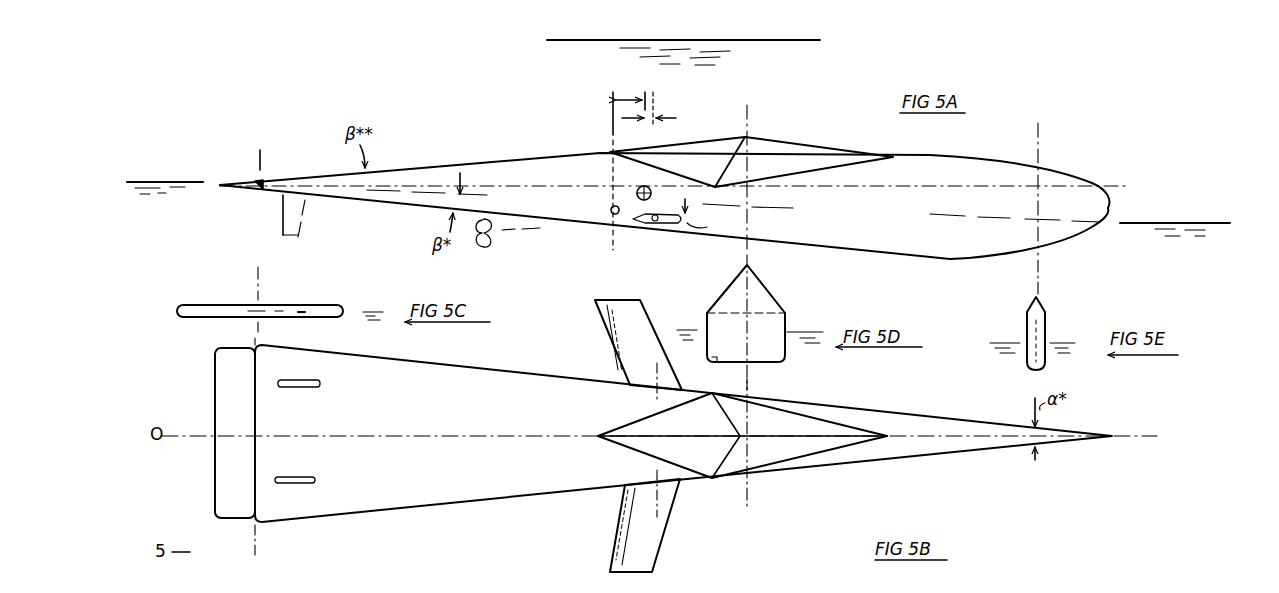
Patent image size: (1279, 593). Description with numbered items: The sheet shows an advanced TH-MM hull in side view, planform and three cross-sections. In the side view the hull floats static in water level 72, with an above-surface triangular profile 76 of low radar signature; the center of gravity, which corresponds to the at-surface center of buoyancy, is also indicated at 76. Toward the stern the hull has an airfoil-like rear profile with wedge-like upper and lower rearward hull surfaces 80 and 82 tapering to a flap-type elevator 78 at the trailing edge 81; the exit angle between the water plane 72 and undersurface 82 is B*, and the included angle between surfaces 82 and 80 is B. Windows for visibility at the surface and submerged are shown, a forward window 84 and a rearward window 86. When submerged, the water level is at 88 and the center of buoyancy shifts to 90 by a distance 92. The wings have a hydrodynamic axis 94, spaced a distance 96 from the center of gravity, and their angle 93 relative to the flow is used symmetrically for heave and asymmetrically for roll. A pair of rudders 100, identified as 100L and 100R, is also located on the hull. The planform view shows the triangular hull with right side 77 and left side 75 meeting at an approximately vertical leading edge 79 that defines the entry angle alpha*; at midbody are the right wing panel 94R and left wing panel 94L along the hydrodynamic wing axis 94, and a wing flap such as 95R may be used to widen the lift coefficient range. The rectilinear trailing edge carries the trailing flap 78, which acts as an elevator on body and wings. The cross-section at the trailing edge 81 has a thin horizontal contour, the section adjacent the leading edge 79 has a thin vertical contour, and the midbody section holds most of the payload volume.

In FIG. 5A, the water level 72 is at (190, 181).
In FIG. 5A, the left side 75 is at (765, 154).
In FIG. 5B, the left side 75 is at (915, 410).
In FIG. 5A, the above-surface triangular profile 76 is at (607, 207).
In FIG. 5E, the above-surface triangular profile 76 is at (1040, 298).
In FIG. 5B, the above-surface triangular profile 76 is at (962, 436).
In FIG. 5A, the right side 77 is at (893, 222).
In FIG. 5B, the right side 77 is at (915, 458).
In FIG. 5A, the flap-type elevator 78 is at (243, 170).
In FIG. 5C, the flap-type elevator 78 is at (293, 312).
In FIG. 5B, the flap-type elevator 78 is at (215, 395).
In FIG. 5A, the vertical leading edge 79 is at (1110, 197).
In FIG. 5B, the vertical leading edge 79 is at (1112, 436).
In FIG. 5A, the upper rearward hull surface 80 is at (403, 165).
In FIG. 5C, the upper rearward hull surface 80 is at (207, 302).
In FIG. 5B, the upper rearward hull surface 80 is at (420, 395).
In FIG. 5A, the trailing edge 81 is at (263, 182).
In FIG. 5A, the lower rearward hull surface 82 is at (402, 210).
In FIG. 5C, the lower rearward hull surface 82 is at (195, 320).
In FIG. 5A, the forward window 84 is at (802, 155).
In FIG. 5D, the forward window 84 is at (768, 287).
In FIG. 5B, the forward window 84 is at (742, 435).
In FIG. 5A, the rearward window 86 is at (700, 160).
In FIG. 5A, the submerged water level 88 is at (767, 38).
In FIG. 5A, the submerged center of buoyancy 90 is at (637, 188).
In FIG. 5A, the center of buoyancy shift distance 92 is at (628, 97).
In FIG. 5A, the wing angle 93 is at (698, 228).
In FIG. 5A, the hydrodynamic wing axis 94 is at (657, 226).
In FIG. 5B, the left wing panel 94L is at (672, 385).
In FIG. 5B, the right wing panel 94R is at (662, 533).
In FIG. 5B, the right wing flap 95R is at (617, 537).
In FIG. 5A, the distance from center of gravity to wing axis 96 is at (613, 245).
In FIG. 5A, the rudder 100 is at (283, 210).
In FIG. 5B, the left rudder 100L is at (315, 378).
In FIG. 5B, the right rudder 100R is at (305, 490).